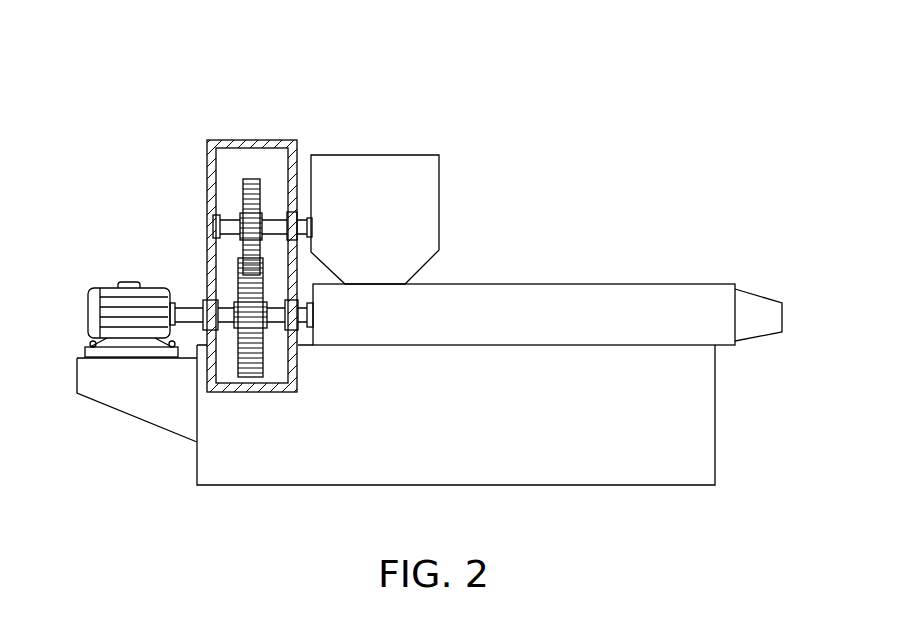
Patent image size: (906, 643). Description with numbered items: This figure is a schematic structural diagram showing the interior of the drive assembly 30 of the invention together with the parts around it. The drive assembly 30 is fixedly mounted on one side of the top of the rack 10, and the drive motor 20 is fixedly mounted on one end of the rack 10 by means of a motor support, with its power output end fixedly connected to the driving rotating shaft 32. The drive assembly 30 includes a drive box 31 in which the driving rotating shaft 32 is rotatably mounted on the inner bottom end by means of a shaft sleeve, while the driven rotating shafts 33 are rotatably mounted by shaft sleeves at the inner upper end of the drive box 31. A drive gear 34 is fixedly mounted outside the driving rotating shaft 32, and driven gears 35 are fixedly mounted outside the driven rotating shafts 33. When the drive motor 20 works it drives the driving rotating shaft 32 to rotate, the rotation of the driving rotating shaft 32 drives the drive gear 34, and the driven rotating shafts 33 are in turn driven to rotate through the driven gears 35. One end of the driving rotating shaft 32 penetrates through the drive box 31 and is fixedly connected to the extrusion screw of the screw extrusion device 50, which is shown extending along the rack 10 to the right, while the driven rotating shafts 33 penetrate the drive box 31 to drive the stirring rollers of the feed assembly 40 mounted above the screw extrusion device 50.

The rack 10 is at (618, 380).
The drive motor 20 is at (125, 312).
The drive assembly 30 is at (266, 202).
The drive box 31 is at (290, 143).
The driving rotating shaft 32 is at (223, 318).
The driven rotating shaft 33 is at (220, 223).
The drive gear 34 is at (263, 275).
The driven gear 35 is at (248, 177).
The feed assembly 40 is at (420, 190).
The screw extrusion device 50 is at (527, 313).